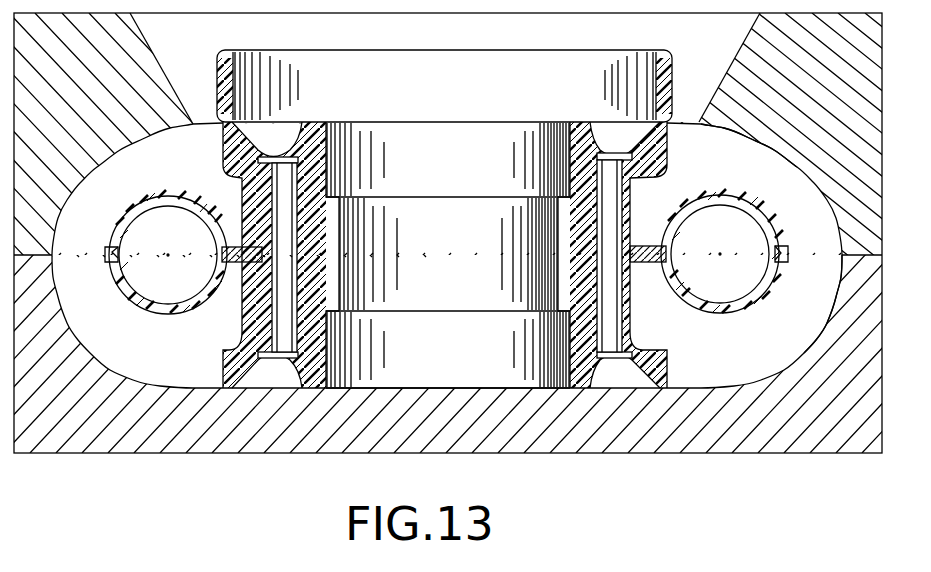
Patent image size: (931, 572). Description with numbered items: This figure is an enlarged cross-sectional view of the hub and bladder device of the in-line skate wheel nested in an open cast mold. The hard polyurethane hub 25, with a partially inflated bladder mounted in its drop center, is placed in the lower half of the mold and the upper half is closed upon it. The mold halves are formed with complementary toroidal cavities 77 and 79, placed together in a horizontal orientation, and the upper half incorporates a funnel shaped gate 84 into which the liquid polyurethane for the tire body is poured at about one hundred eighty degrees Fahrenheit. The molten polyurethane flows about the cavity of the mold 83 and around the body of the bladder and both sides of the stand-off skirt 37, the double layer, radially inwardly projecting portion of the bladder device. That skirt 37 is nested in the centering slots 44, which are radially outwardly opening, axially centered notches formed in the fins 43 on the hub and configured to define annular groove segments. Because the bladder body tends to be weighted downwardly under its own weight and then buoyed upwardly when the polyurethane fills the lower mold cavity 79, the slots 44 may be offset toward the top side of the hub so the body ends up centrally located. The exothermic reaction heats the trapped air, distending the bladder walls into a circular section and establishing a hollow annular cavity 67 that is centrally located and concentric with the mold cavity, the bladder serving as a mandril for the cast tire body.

The hub 25 is at (463, 121).
The funnel shaped gate 84 is at (155, 43).
The toroidal cavity 77 is at (807, 173).
The cavity of the mold 83 is at (753, 131).
The lower mold cavity 79 is at (806, 337).
The annular cavity 67 is at (742, 300).
The stand-off skirt 37 is at (240, 286).
The fins 43 is at (240, 316).
The centering slots 44 is at (263, 251).